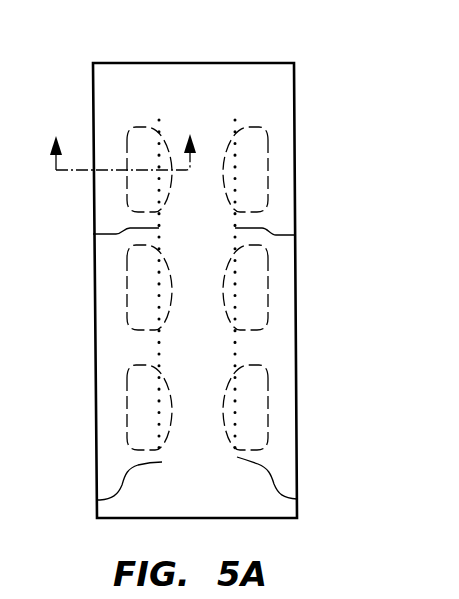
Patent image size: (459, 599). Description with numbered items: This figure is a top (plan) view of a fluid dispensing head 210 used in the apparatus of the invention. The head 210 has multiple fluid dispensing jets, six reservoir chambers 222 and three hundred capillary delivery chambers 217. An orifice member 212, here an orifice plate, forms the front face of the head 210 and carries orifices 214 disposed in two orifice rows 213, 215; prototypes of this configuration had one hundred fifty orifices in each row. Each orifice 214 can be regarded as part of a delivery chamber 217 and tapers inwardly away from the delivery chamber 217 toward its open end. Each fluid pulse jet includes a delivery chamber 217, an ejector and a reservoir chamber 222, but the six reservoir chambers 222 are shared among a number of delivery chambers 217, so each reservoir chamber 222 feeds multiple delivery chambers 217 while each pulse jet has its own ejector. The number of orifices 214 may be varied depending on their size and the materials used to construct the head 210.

The fluid dispensing head 210 is at (336, 129).
The orifice member 212 is at (296, 84).
The orifice row 213 is at (97, 500).
The orifice 214 is at (93, 234).
The orifice row 215 is at (297, 499).
The capillary delivery chamber 217 is at (171, 160).
The reservoir chamber 222 is at (142, 152).